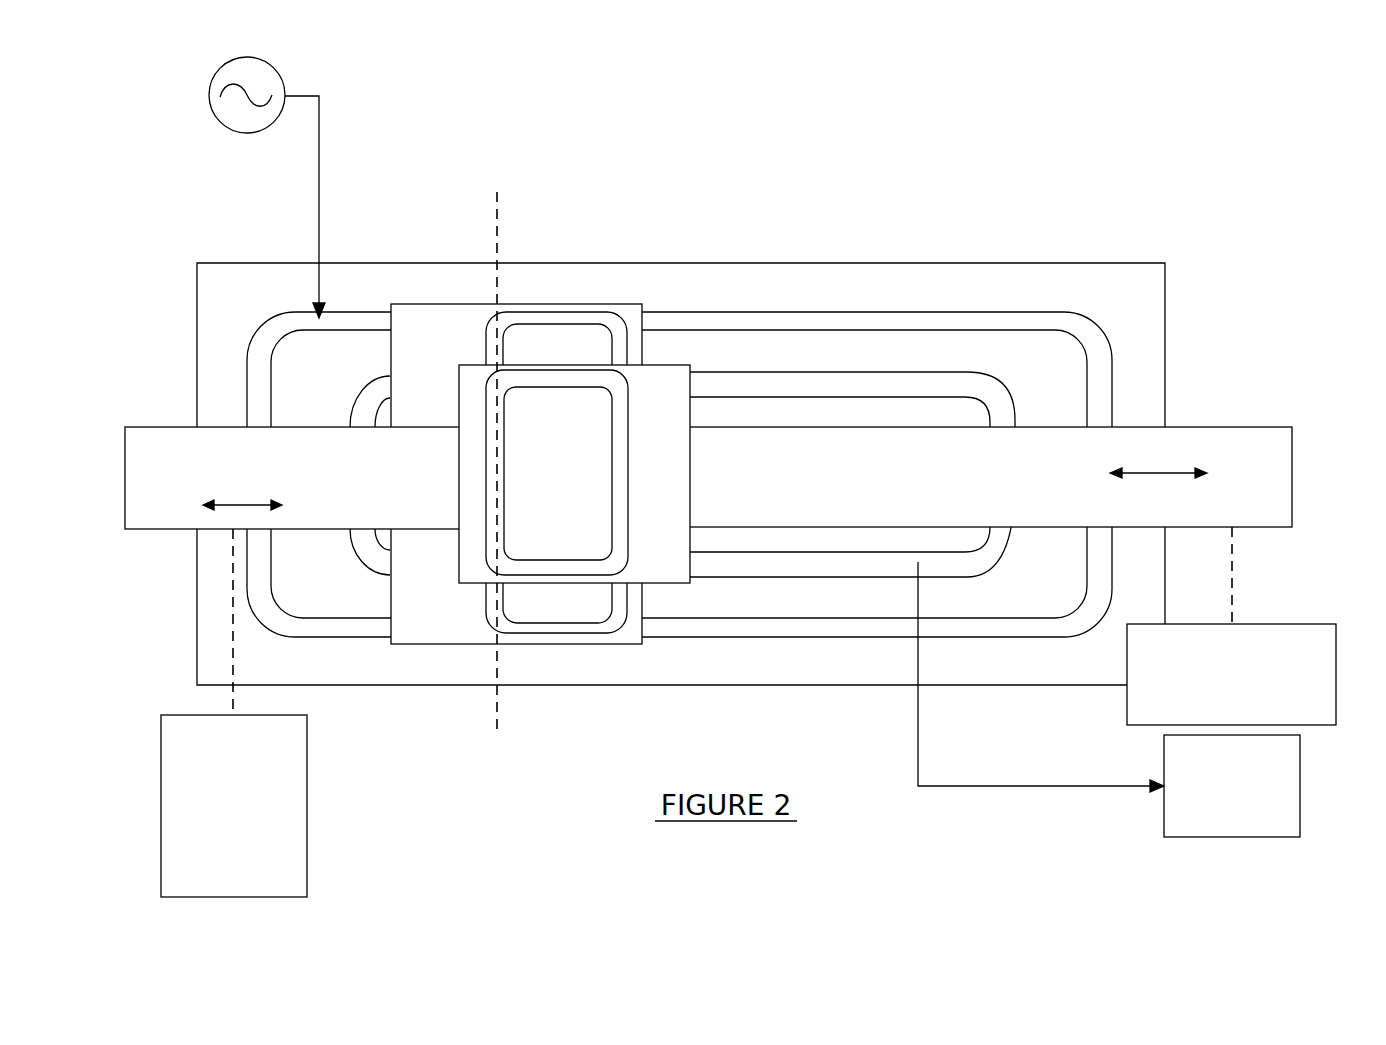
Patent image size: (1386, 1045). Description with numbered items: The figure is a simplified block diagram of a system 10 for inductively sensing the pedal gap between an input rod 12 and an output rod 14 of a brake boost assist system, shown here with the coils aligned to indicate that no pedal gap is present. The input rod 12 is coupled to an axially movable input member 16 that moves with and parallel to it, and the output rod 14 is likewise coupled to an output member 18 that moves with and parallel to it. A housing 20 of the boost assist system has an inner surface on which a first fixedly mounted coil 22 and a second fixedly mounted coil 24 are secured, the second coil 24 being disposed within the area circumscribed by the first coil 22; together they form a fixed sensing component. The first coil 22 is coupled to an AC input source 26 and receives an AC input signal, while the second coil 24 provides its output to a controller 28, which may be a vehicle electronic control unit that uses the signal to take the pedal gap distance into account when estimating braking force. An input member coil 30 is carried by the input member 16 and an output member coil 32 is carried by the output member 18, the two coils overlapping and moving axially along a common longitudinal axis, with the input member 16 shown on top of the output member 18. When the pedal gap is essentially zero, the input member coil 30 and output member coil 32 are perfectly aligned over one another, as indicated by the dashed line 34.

The system 10 is at (730, 462).
The input rod 12 is at (1231, 626).
The output rod 14 is at (234, 713).
The input member 16 is at (1197, 432).
The output member 18 is at (155, 432).
The housing 20 is at (990, 288).
The first fixedly mounted coil 22 is at (823, 324).
The second fixedly mounted coil 24 is at (842, 563).
The AC input source 26 is at (247, 120).
The controller 28 is at (1109, 699).
The input member coil 30 is at (625, 473).
The output member coil 32 is at (618, 348).
The dashed line 34 is at (498, 210).